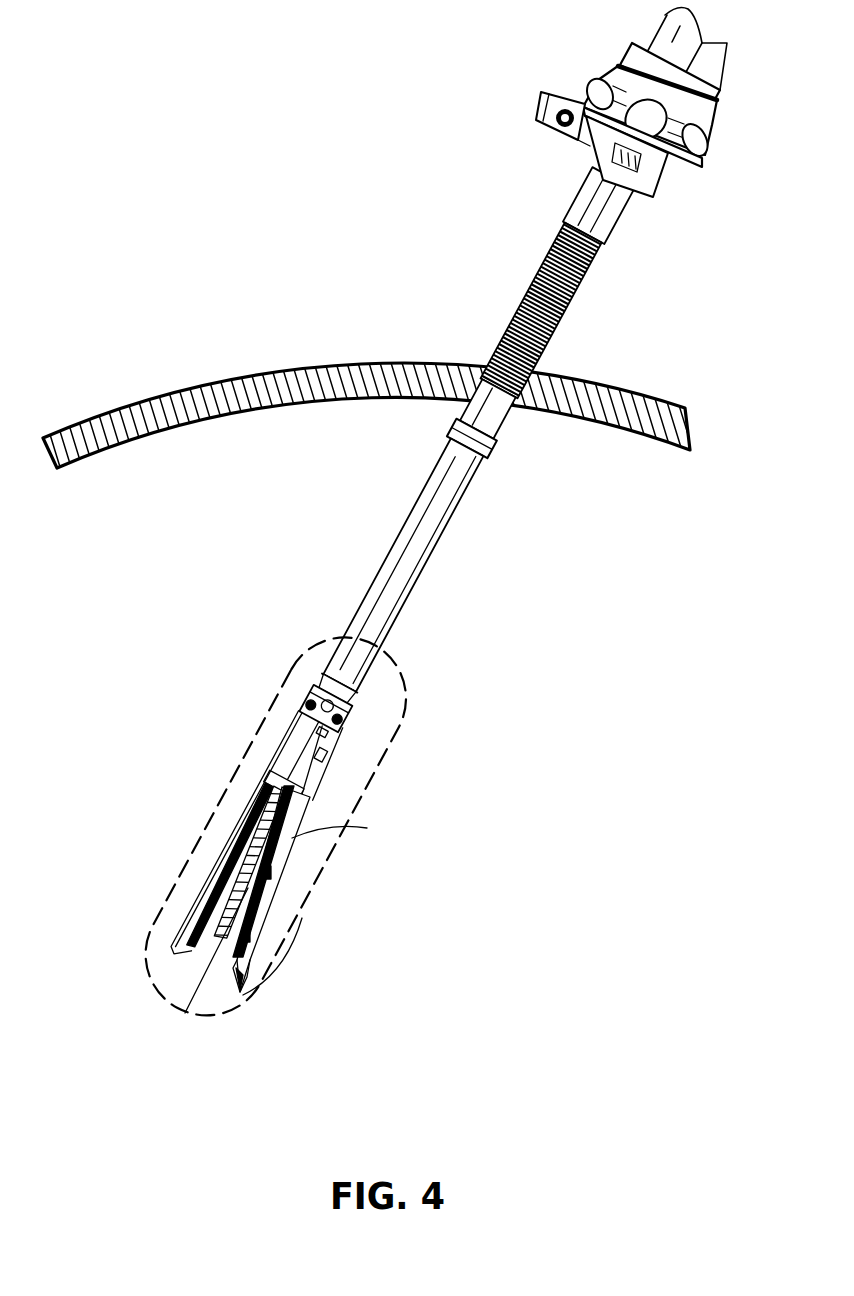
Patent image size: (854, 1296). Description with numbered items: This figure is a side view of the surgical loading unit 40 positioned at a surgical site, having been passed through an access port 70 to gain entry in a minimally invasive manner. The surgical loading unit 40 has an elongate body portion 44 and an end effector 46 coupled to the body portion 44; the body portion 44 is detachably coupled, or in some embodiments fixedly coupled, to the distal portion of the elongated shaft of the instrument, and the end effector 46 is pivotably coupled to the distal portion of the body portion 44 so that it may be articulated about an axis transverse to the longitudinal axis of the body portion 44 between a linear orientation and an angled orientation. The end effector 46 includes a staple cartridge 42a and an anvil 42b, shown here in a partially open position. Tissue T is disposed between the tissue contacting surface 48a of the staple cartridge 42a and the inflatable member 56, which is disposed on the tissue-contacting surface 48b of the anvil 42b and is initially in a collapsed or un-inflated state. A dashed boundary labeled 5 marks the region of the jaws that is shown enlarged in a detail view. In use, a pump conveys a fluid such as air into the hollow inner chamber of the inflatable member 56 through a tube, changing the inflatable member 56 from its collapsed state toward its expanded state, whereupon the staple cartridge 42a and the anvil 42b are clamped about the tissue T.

The access port 70 is at (582, 200).
The elongate body portion 44 is at (407, 547).
The surgical loading unit 40 is at (310, 624).
The staple cartridge 42a is at (259, 922).
The anvil 42b is at (213, 912).
The tissue contacting surface 48a is at (221, 960).
The tissue-contacting surface 48b is at (287, 787).
The end effector 46 is at (312, 857).
The inflatable member 56 is at (223, 915).
The detail area of FIG. 5 is at (223, 795).
The tissue T is at (280, 931).